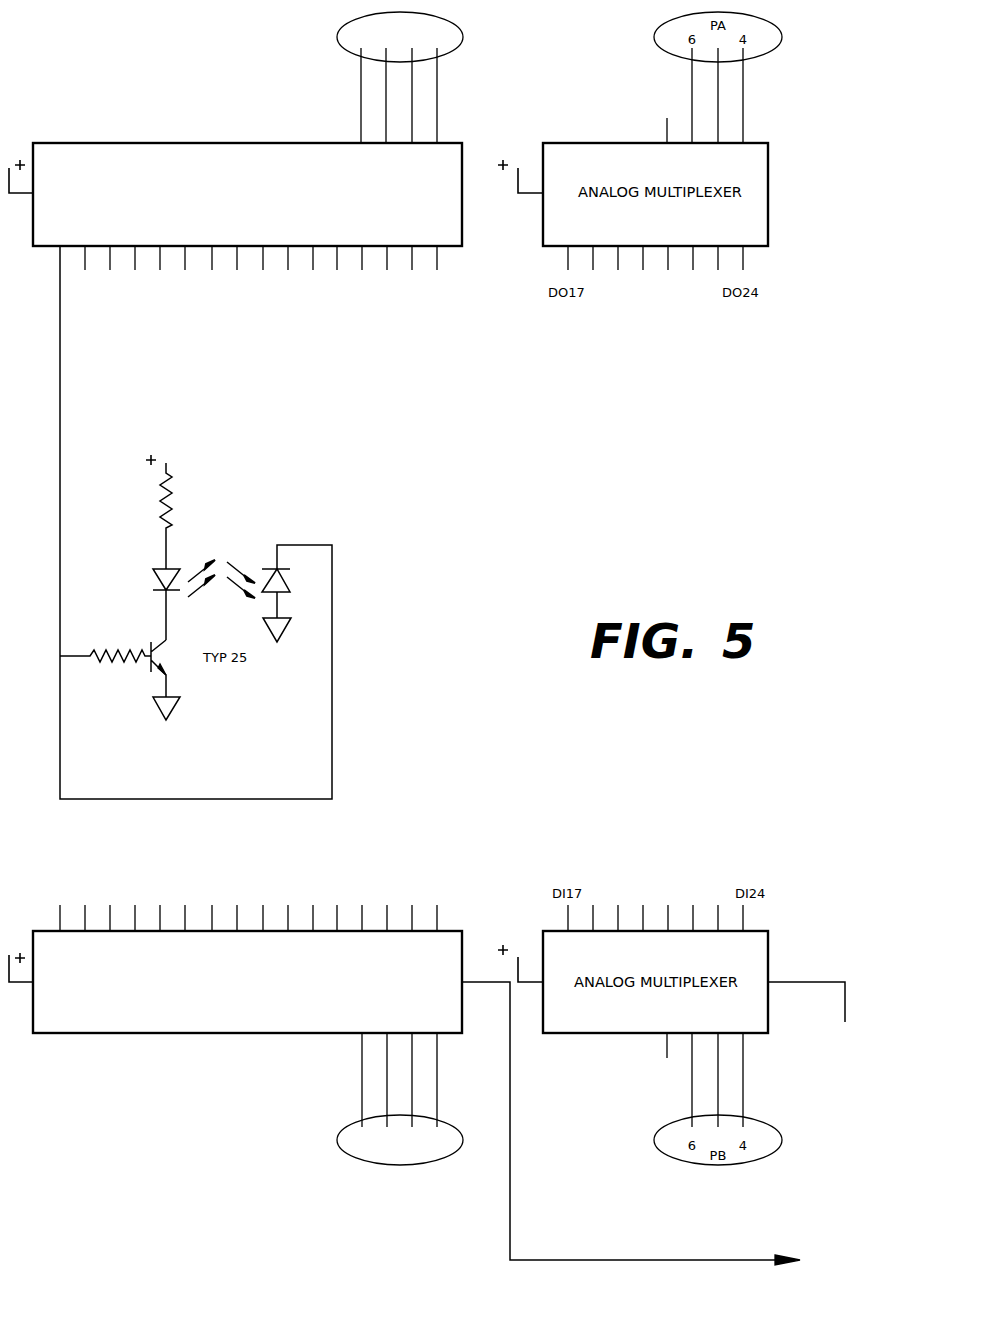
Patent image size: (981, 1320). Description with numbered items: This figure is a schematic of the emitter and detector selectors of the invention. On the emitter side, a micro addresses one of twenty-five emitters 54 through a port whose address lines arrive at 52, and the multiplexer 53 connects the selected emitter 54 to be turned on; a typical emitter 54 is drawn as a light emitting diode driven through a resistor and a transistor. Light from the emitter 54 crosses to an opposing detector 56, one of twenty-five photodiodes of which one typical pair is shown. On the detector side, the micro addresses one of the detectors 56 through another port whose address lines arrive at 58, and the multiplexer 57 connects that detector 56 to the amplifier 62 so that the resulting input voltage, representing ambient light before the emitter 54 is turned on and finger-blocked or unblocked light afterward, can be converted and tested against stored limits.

The port 52 is at (343, 52).
The multiplexer 53 is at (267, 247).
The emitter 54 is at (163, 587).
The detector 56 is at (285, 585).
The multiplexer 57 is at (223, 1035).
The port 58 is at (398, 1165).
The amplifier 62 is at (632, 1123).